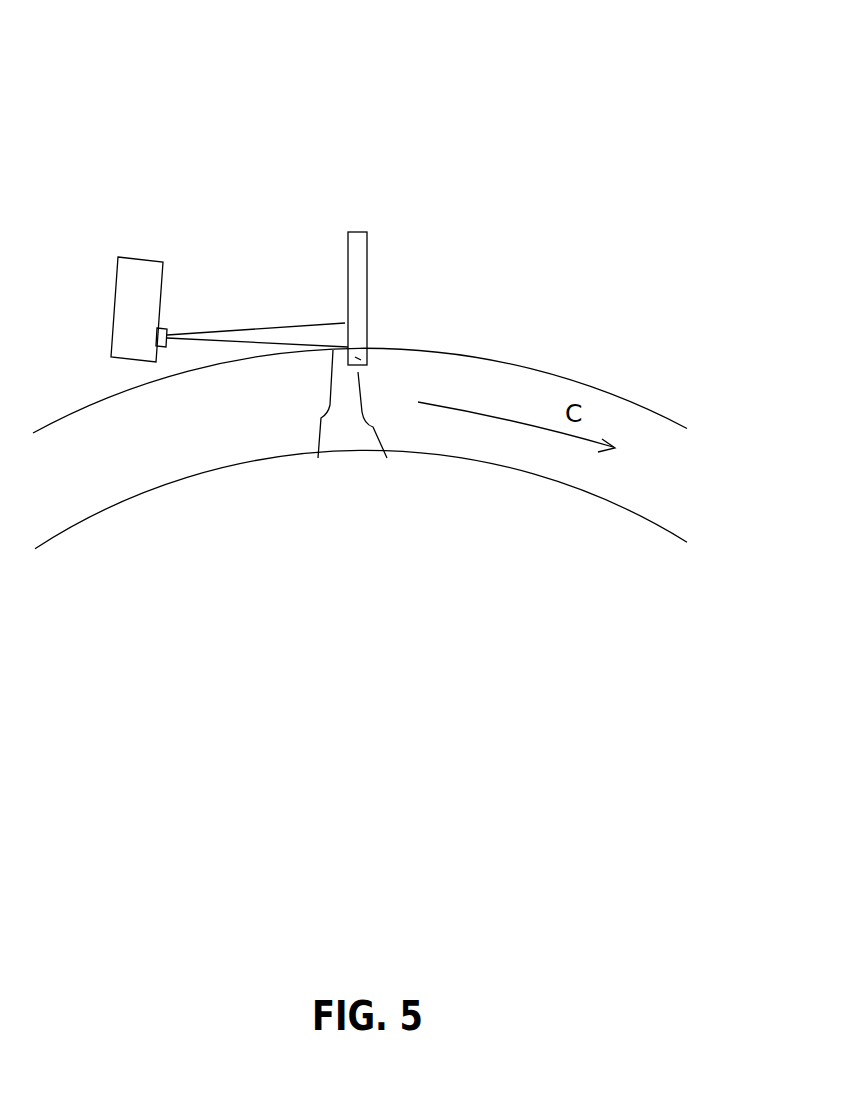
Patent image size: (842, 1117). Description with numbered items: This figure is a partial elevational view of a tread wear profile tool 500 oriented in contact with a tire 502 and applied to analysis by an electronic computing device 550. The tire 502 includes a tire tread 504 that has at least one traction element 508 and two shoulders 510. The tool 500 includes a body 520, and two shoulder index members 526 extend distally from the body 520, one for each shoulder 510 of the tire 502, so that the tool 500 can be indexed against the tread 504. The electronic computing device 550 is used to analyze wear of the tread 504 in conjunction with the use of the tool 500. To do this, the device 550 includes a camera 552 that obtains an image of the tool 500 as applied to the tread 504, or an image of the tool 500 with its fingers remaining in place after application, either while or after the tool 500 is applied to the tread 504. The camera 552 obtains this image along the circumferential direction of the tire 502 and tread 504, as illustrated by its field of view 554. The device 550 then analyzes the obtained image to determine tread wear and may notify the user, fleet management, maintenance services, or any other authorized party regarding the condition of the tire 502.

The tread wear profile tool 500 is at (447, 155).
The tire 502 is at (197, 422).
The tire tread 504 is at (527, 340).
The traction element 508 is at (318, 458).
The shoulder 510 is at (387, 458).
The body 520 is at (359, 252).
The shoulder index member 526 is at (365, 357).
The electronic computing device 550 is at (193, 227).
The camera 552 is at (140, 258).
The field of view 554 is at (283, 330).